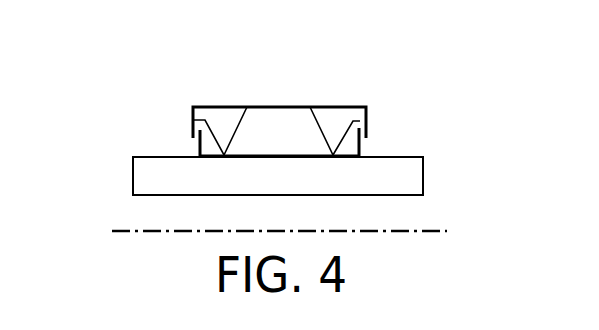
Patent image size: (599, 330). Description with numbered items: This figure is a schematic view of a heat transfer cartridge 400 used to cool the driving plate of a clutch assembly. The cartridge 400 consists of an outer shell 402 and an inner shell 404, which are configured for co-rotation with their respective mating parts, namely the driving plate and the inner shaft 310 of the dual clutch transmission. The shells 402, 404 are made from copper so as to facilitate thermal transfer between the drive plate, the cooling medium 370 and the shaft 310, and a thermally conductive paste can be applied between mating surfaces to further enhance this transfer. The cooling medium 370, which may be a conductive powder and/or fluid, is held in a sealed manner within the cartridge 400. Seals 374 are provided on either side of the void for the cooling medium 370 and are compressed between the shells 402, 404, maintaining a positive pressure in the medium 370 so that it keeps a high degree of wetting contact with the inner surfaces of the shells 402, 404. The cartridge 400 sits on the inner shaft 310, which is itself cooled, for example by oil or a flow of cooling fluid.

The cartridge 400 is at (142, 123).
The outer shell 402 is at (367, 117).
The inner shell 404 is at (360, 148).
The seal 374 is at (216, 116).
The cooling medium 370 is at (277, 123).
The inner shaft 310 is at (416, 175).